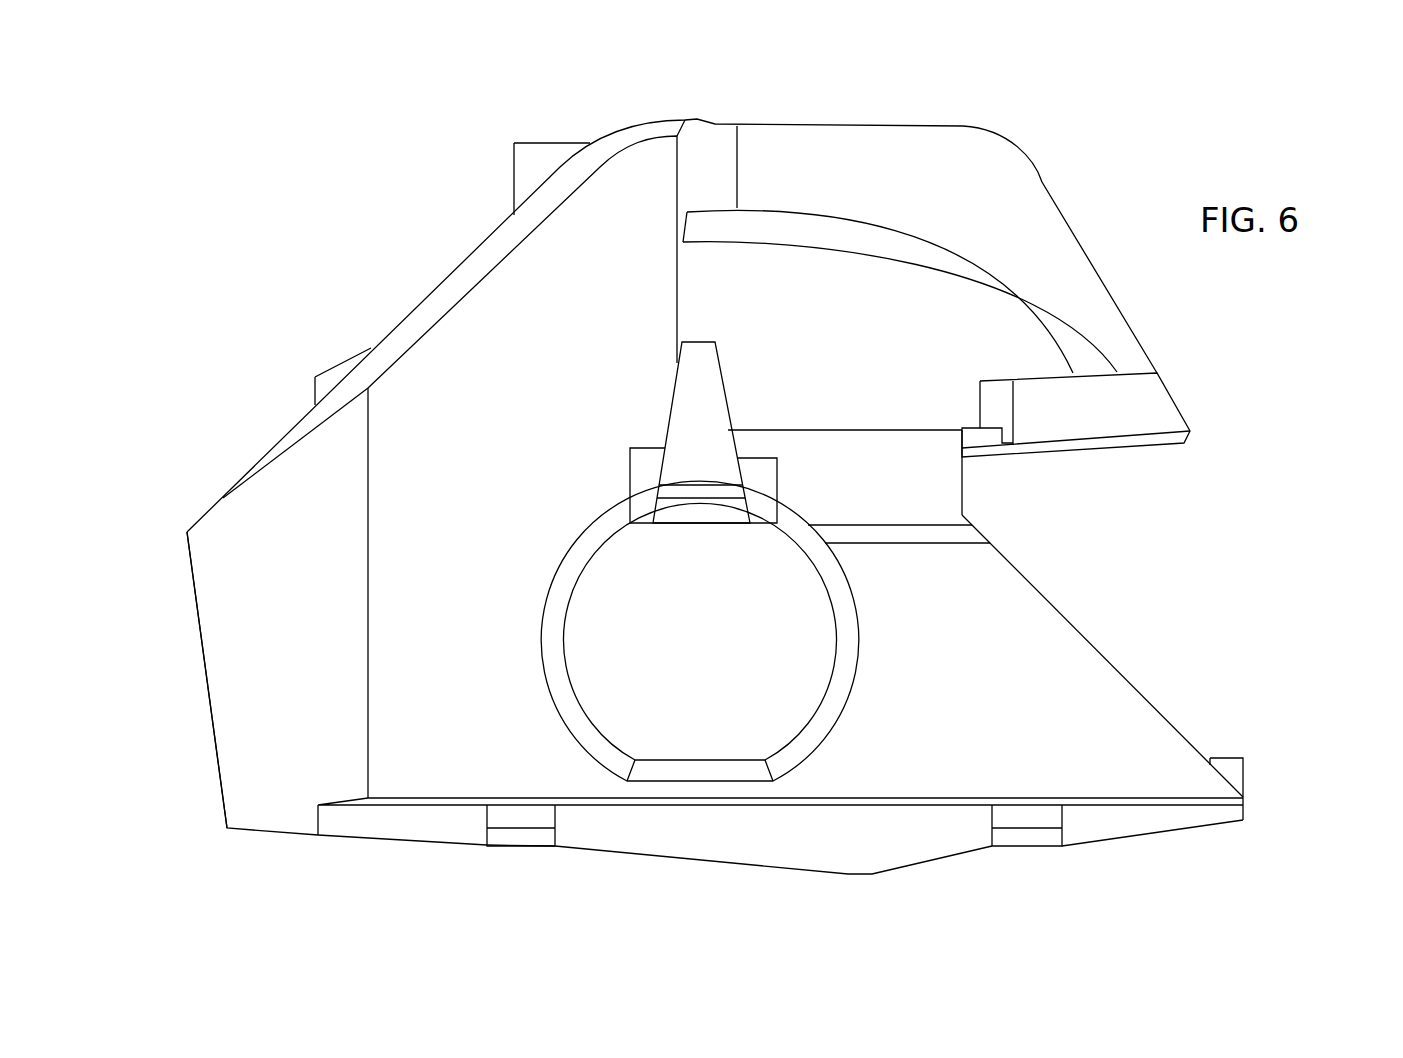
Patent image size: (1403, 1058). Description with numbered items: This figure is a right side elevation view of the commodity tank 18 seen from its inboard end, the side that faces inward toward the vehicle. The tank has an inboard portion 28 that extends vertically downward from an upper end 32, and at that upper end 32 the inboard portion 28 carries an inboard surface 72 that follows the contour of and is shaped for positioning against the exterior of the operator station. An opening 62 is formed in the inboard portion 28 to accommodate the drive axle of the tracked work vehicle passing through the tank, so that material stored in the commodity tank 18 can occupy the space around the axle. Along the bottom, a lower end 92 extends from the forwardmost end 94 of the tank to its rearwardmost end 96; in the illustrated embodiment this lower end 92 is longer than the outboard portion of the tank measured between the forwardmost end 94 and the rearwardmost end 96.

The commodity tank 18 is at (304, 162).
The inboard portion 28 is at (517, 302).
The upper end 32 is at (647, 133).
The inboard surface 72 is at (693, 155).
The opening 62 is at (815, 718).
The lower end 92 is at (522, 853).
The forwardmost end 94 is at (1255, 798).
The rearwardmost end 96 is at (197, 708).